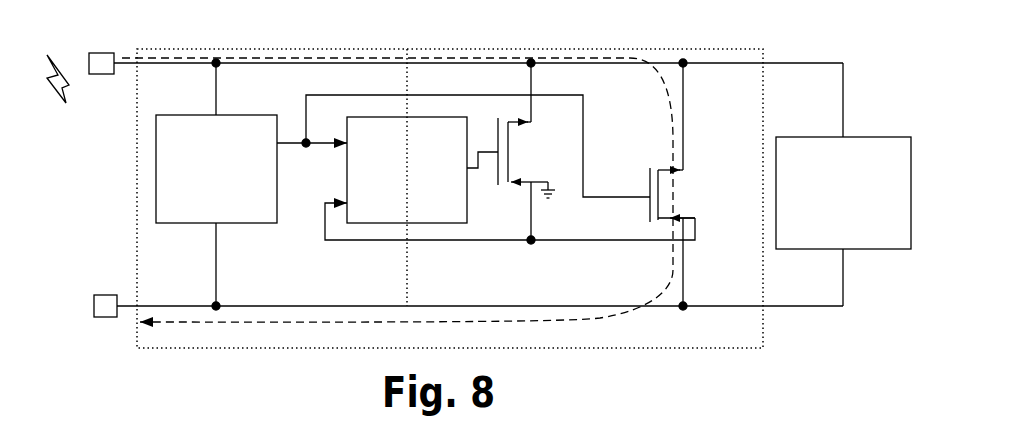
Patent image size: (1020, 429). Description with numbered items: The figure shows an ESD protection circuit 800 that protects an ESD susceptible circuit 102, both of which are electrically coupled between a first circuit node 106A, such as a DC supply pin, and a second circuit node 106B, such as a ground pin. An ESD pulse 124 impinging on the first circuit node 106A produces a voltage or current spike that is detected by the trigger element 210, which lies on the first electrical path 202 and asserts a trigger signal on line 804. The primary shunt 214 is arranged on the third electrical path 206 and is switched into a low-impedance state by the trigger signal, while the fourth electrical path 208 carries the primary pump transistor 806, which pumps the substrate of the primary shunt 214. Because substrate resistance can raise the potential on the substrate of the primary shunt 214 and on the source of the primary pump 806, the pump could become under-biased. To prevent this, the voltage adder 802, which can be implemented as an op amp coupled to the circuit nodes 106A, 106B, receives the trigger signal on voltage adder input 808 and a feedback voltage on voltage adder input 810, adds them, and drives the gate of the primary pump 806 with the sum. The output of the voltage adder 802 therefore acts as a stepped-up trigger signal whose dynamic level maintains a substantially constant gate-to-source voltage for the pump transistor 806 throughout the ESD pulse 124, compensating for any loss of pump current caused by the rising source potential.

The ESD protection circuit 800 is at (513, 49).
The first circuit node 106A is at (104, 53).
The second circuit node 106B is at (104, 295).
The ESD pulse 124 is at (67, 93).
The first electrical path 202 is at (223, 84).
The first trigger element 210 is at (199, 207).
The voltage adder input 808 is at (341, 150).
The trigger signal line 804 is at (278, 138).
The voltage adder input 810 is at (343, 197).
The voltage adder 802 is at (390, 207).
The third electrical path 206 is at (540, 86).
The primary pump transistor 806 is at (525, 149).
The fourth electrical path 208 is at (690, 88).
The primary shunt 214 is at (690, 190).
The ESD susceptible circuit 102 is at (826, 243).